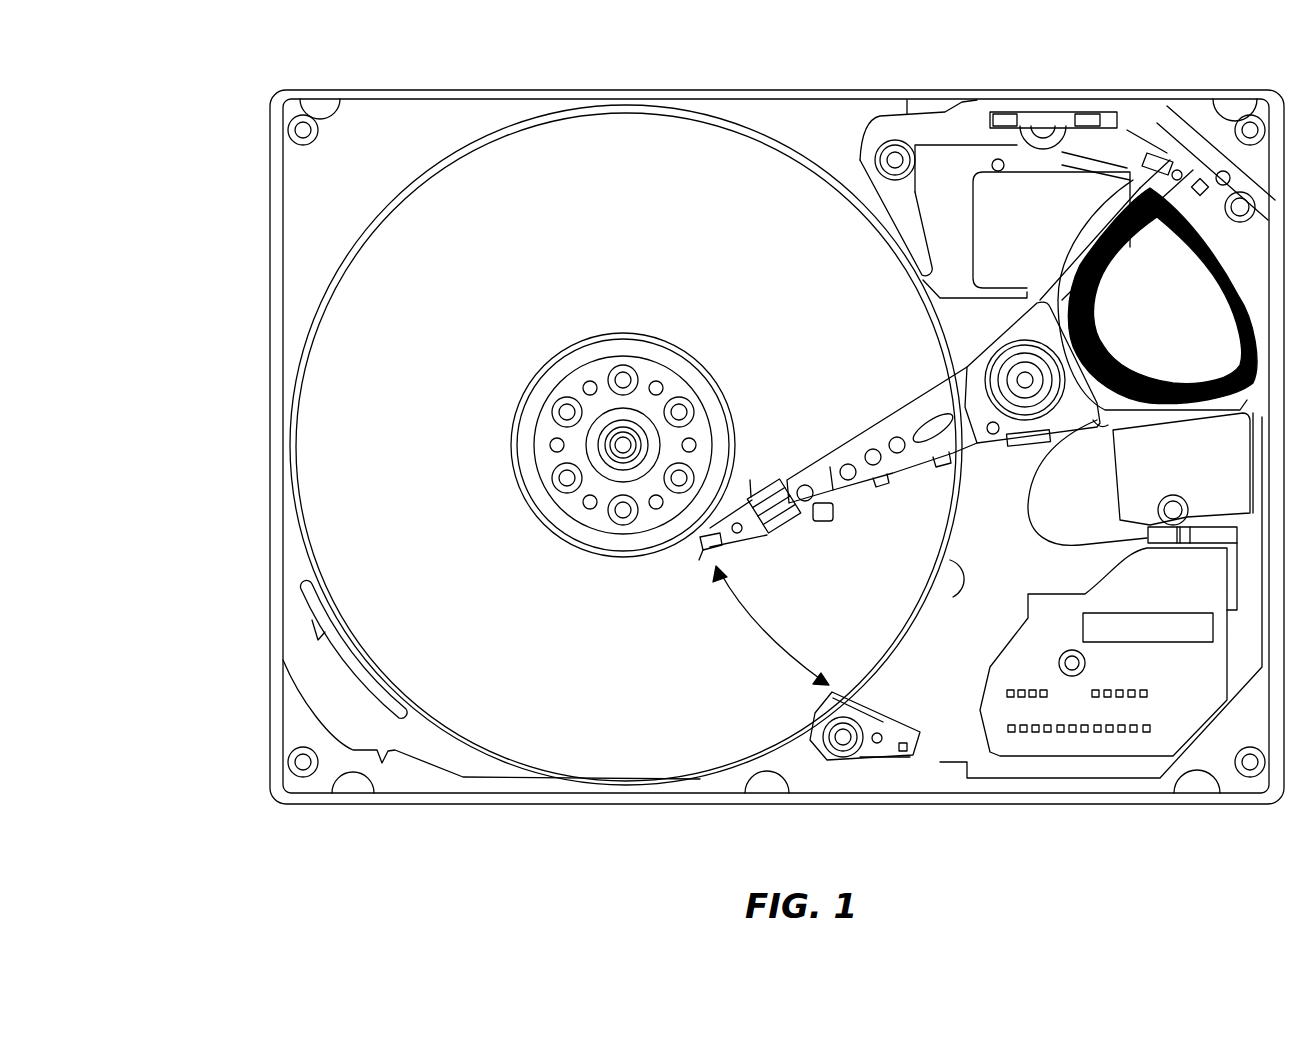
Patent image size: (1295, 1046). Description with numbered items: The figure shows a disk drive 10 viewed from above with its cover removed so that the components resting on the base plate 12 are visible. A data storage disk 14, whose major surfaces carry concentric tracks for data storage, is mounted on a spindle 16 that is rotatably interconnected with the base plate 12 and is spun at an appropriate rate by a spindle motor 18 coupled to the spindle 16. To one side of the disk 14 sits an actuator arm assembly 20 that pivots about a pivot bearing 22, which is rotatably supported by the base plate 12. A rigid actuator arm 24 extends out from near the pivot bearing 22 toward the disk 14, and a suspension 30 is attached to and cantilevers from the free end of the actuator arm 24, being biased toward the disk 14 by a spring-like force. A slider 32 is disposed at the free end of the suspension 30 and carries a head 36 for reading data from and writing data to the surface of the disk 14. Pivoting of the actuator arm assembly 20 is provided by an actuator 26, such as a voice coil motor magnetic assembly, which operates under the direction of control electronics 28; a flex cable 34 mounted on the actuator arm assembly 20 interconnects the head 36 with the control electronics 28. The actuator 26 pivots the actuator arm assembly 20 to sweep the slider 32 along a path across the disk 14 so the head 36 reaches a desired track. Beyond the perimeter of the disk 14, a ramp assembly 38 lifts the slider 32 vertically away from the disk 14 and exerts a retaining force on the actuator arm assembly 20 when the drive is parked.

The disk drive 10 is at (694, 410).
The base plate 12 is at (492, 86).
The data storage disk 14 is at (637, 143).
The spindle 16 is at (655, 340).
The spindle motor 18 is at (602, 413).
The actuator arm assembly 20 is at (891, 403).
The pivot bearing 22 is at (1020, 408).
The actuator arm 24 is at (863, 490).
The actuator arm drive assembly 26 is at (1157, 352).
The control electronics 28 is at (1080, 740).
The suspension 30 is at (751, 498).
The slider 32 is at (700, 553).
The flex cable 34 is at (1036, 542).
The head 36 is at (700, 562).
The ramp assembly 38 is at (873, 757).